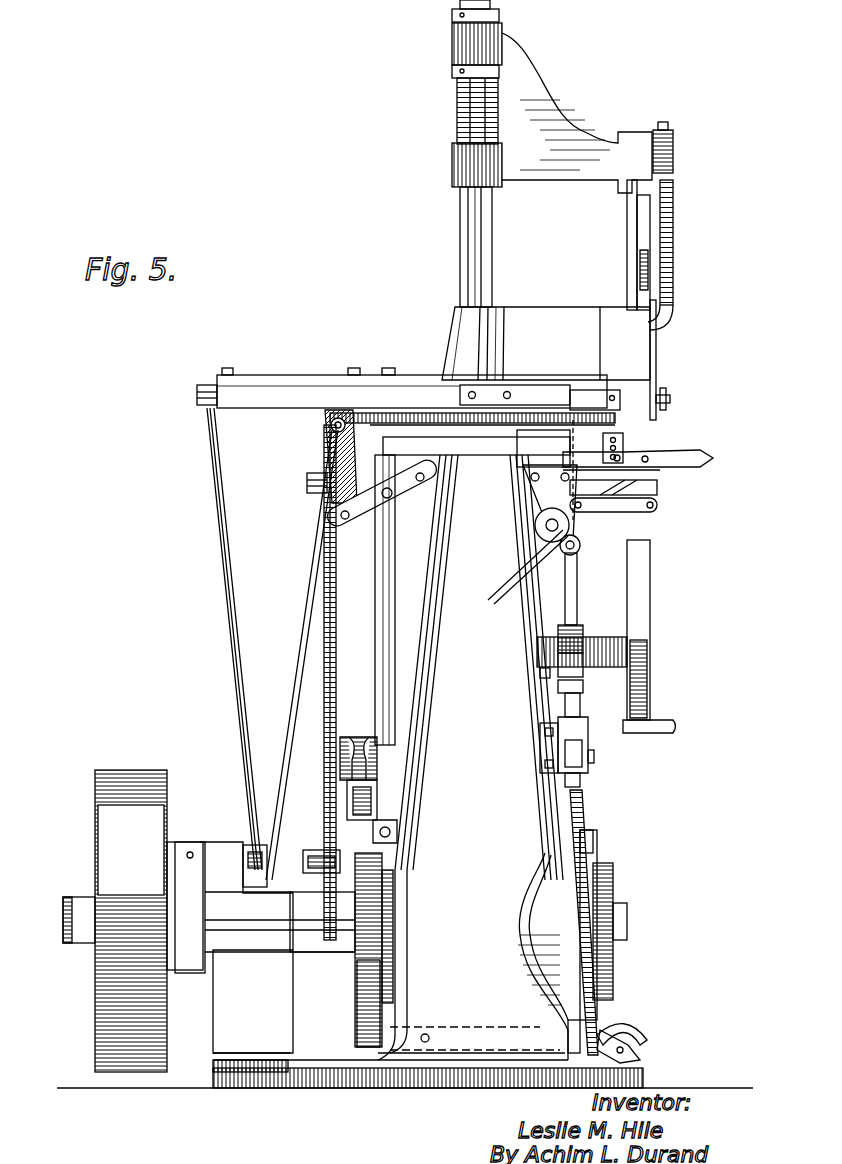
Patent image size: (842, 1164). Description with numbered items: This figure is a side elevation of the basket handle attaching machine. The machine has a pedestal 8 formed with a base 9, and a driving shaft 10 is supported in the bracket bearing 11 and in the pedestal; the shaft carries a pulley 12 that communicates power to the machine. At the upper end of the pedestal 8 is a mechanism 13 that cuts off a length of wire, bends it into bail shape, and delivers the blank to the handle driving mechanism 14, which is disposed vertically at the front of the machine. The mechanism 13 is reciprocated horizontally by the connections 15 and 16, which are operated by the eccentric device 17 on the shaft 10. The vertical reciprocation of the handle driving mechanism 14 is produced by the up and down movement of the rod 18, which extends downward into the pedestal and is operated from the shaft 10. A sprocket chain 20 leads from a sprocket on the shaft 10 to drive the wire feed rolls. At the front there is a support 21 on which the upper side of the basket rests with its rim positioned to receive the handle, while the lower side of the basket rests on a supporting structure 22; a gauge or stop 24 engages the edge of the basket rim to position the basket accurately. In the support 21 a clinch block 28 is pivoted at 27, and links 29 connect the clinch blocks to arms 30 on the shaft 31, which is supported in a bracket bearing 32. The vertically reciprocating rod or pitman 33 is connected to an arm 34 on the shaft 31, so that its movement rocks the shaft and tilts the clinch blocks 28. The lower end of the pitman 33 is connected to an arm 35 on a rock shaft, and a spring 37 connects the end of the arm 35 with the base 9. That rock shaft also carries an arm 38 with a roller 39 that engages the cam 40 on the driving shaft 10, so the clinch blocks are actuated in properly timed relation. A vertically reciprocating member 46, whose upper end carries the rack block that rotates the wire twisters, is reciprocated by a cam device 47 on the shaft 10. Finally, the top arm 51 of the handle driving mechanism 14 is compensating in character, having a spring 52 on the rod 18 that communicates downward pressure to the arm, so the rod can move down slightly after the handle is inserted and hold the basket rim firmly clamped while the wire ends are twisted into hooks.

The pedestal 8 is at (500, 818).
The base 9 is at (397, 1100).
The driving shaft 10 is at (65, 937).
The bracket bearing 11 is at (245, 995).
The pulley 12 is at (122, 813).
The mechanism 13 is at (418, 388).
The handle driving mechanism 14 is at (625, 362).
The connection 15 is at (340, 478).
The connection 16 is at (380, 570).
The eccentric device 17 is at (390, 907).
The rod 18 is at (472, 270).
The sprocket chain 20 is at (330, 646).
The support 21 is at (660, 460).
The supporting structure 22 is at (640, 626).
The gauge or stop 24 is at (605, 438).
The pivot 27 is at (648, 457).
The clinch block 28 is at (633, 490).
The link 29 is at (625, 512).
The arm 30 is at (565, 522).
The shaft 31 is at (548, 525).
The bracket bearing 32 is at (548, 490).
The rod or pitman 33 is at (578, 565).
The arm 34 is at (545, 555).
The arm 35 is at (575, 760).
The spring 37 is at (580, 890).
The arm 38 is at (360, 765).
The roller 39 is at (365, 797).
The cam 40 is at (372, 970).
The vertically reciprocating member 46 is at (517, 820).
The cam device 47 is at (595, 913).
The top arm 51 is at (582, 145).
The spring 52 is at (455, 100).